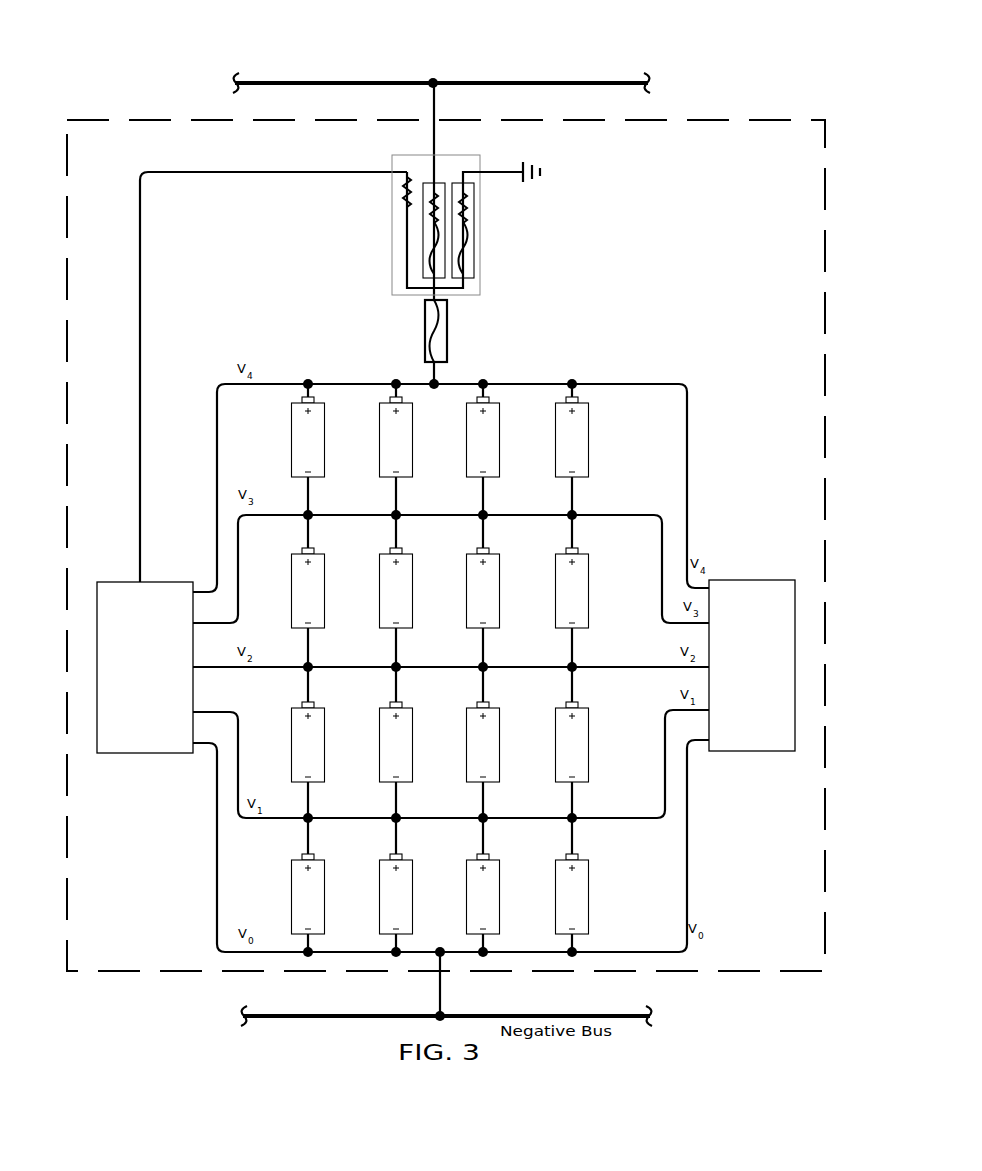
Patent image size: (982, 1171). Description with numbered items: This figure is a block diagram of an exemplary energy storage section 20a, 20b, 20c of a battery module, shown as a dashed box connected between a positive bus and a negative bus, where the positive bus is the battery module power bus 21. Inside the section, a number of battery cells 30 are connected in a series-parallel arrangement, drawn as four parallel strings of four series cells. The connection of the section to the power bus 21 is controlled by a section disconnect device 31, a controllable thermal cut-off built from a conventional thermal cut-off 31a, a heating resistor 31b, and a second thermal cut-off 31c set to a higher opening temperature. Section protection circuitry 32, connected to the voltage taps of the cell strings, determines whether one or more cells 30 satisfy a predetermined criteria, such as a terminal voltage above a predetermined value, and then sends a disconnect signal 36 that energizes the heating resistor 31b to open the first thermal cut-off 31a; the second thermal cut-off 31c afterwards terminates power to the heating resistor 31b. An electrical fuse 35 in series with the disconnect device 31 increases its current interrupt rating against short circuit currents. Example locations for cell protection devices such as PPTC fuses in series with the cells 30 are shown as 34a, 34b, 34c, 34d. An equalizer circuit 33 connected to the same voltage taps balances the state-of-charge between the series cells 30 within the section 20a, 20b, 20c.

The energy storage section 20a is at (446, 503).
The energy storage section 20b is at (446, 503).
The energy storage section 20c is at (722, 145).
The battery module power bus 21 is at (562, 73).
The battery cell 30 is at (583, 703).
The section disconnect device 31 is at (431, 235).
The thermal cut-off 31a is at (420, 223).
The heating resistor 31b is at (395, 195).
The second thermal cut-off 31c is at (475, 202).
The section protection circuitry 32 is at (142, 757).
The equalizer circuit 33 is at (782, 755).
The cell protection device 34a is at (313, 388).
The cell protection device 34b is at (400, 387).
The cell protection device 34c is at (487, 387).
The cell protection device 34d is at (598, 668).
The electrical fuse 35 is at (450, 333).
The disconnect signal 36 is at (135, 318).